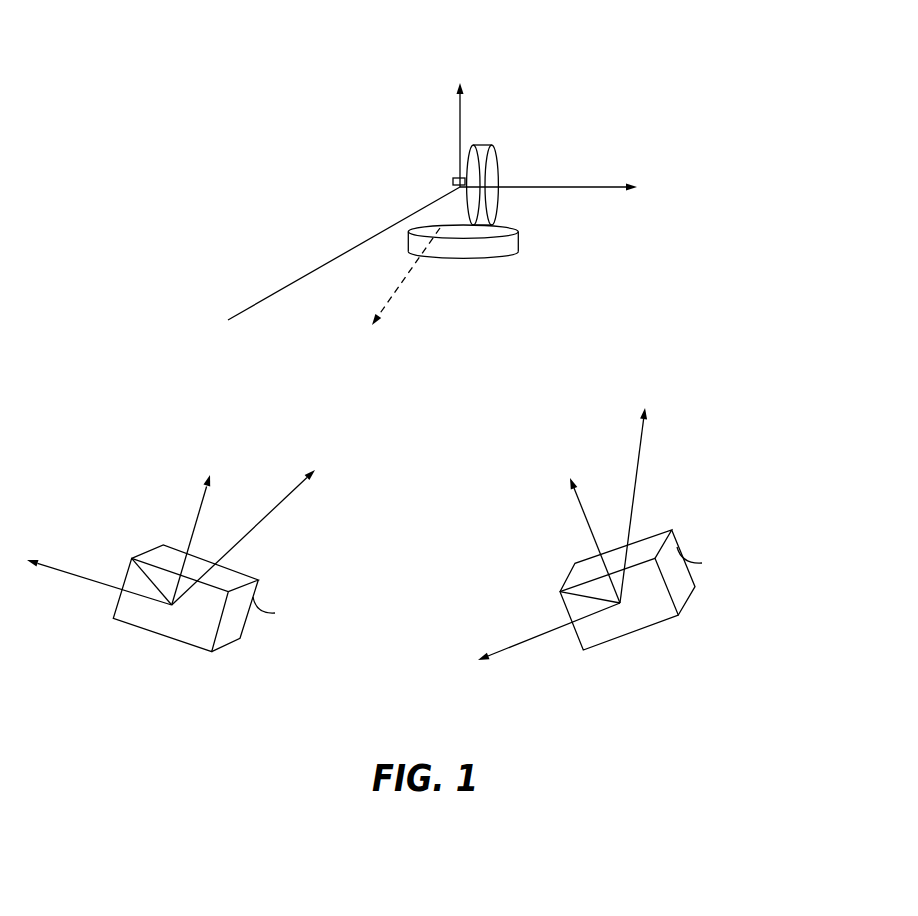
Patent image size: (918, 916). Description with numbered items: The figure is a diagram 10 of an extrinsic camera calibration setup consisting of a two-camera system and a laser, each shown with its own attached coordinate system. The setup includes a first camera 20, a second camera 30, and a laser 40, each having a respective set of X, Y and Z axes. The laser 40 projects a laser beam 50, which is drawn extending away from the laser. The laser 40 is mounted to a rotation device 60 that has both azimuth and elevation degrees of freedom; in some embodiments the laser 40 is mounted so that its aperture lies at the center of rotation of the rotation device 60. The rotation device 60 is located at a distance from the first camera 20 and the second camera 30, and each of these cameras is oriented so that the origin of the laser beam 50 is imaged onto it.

The diagram 10 is at (224, 42).
The first camera 20 is at (623, 635).
The second camera 30 is at (148, 631).
The laser 40 is at (452, 185).
The laser beam 50 is at (352, 248).
The rotation device 60 is at (478, 258).